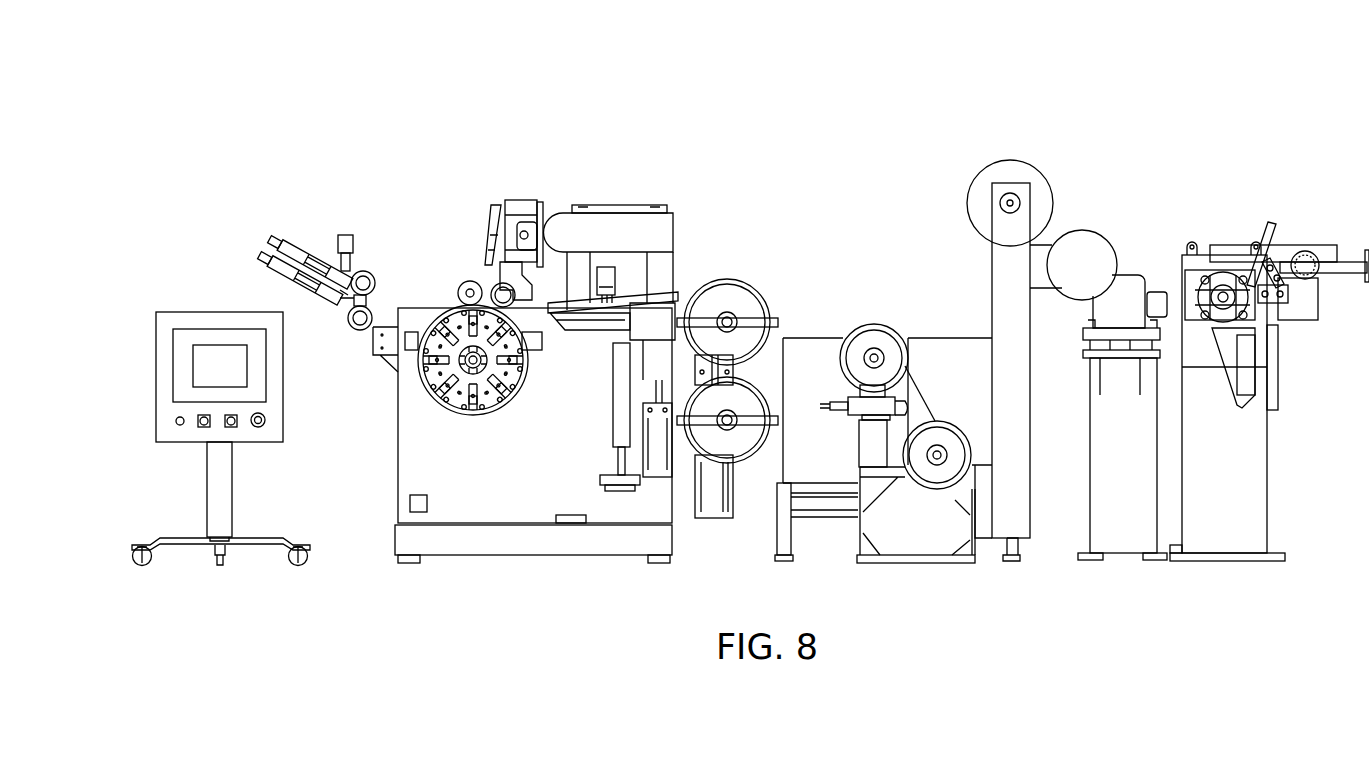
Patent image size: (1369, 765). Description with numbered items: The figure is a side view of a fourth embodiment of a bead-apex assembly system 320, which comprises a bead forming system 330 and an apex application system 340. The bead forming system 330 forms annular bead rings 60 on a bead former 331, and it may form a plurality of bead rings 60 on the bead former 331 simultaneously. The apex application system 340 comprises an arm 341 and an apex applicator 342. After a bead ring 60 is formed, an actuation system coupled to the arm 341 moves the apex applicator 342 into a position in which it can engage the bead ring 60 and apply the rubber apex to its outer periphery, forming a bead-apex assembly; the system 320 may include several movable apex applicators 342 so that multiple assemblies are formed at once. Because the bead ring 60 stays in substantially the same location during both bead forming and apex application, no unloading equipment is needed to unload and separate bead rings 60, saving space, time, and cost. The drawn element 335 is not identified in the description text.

The bead-apex assembly system 320 is at (204, 188).
The bead forming system 330 is at (634, 197).
The bead former 331 is at (443, 296).
The reel tower 335 is at (972, 156).
The apex application system 340 is at (299, 250).
The arm 341 is at (325, 252).
The apex applicator 342 is at (354, 261).
The bead ring 60 is at (508, 393).